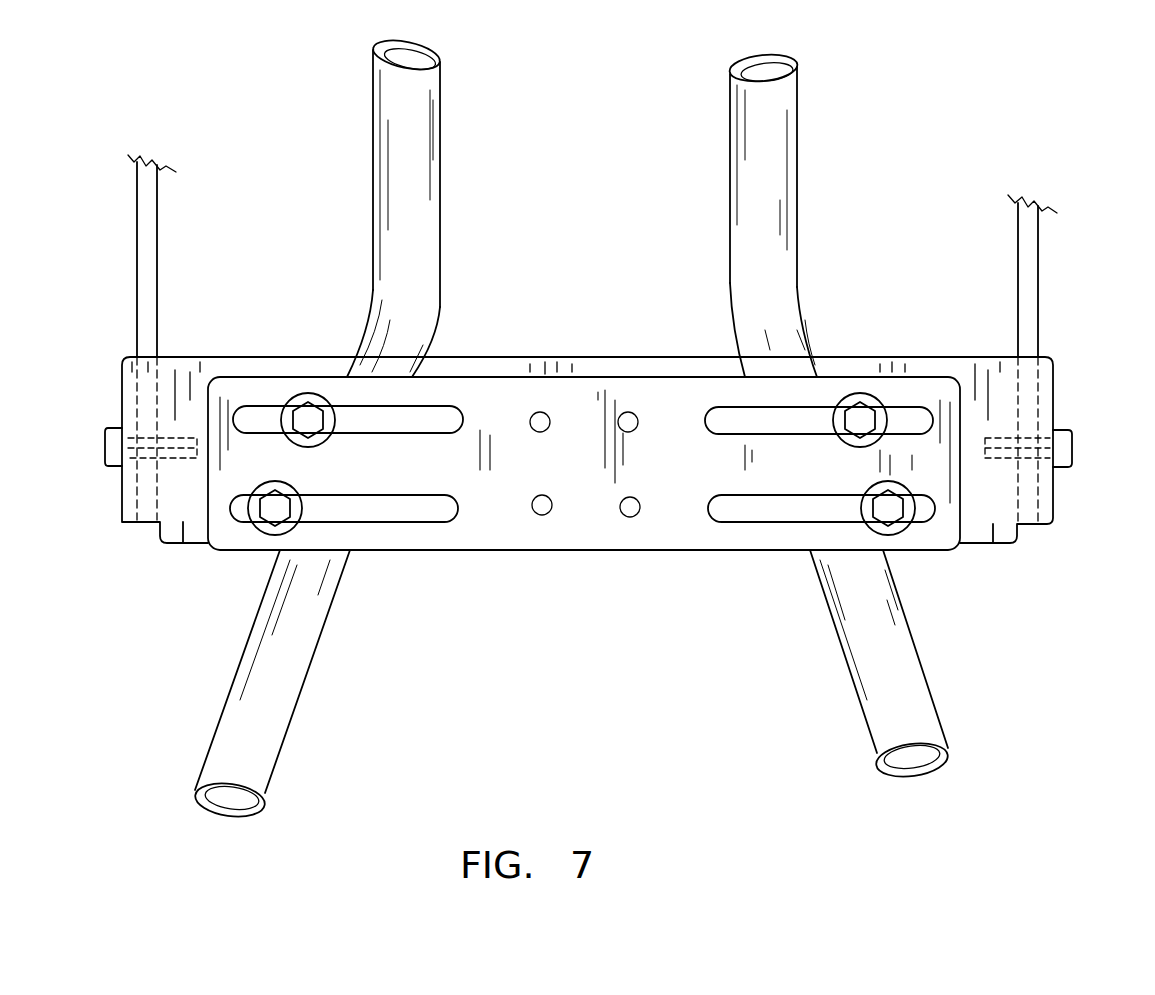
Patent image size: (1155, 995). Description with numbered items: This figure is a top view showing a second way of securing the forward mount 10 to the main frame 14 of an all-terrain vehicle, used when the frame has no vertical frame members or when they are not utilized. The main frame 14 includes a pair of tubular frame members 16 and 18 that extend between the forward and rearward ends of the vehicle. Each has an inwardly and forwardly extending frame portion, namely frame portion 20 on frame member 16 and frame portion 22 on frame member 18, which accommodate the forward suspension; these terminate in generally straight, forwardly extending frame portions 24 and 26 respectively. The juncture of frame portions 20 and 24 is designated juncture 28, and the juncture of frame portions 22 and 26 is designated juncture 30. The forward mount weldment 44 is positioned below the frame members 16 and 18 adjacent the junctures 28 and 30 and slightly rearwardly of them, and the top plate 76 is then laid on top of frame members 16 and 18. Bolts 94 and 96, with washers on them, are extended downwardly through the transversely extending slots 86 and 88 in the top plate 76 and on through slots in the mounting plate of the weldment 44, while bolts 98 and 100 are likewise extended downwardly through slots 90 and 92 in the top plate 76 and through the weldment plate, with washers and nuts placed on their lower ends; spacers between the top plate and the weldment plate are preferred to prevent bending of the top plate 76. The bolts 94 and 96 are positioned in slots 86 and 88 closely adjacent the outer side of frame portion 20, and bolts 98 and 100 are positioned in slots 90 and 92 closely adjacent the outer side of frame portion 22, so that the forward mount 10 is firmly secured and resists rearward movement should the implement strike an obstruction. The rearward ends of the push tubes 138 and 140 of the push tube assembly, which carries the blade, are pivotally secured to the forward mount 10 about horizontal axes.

The forward mount 10 is at (579, 455).
The main frame 14 is at (619, 206).
The tubular frame member 16 is at (944, 665).
The tubular frame member 18 is at (316, 685).
The frame portion 20 is at (893, 693).
The frame portion 22 is at (250, 742).
The frame portion 24 is at (780, 167).
The frame portion 26 is at (427, 180).
The juncture 28 is at (802, 300).
The juncture 30 is at (437, 312).
The forward mount weldment 44 is at (310, 356).
The top plate 76 is at (596, 553).
The slot 86 is at (775, 512).
The slot 88 is at (750, 410).
The slot 90 is at (422, 514).
The slot 92 is at (435, 410).
The bolt 94 is at (890, 512).
The bolt 96 is at (865, 416).
The bolt 98 is at (275, 510).
The bolt 100 is at (300, 418).
The push tube 138 is at (1030, 270).
The push tube 140 is at (150, 247).